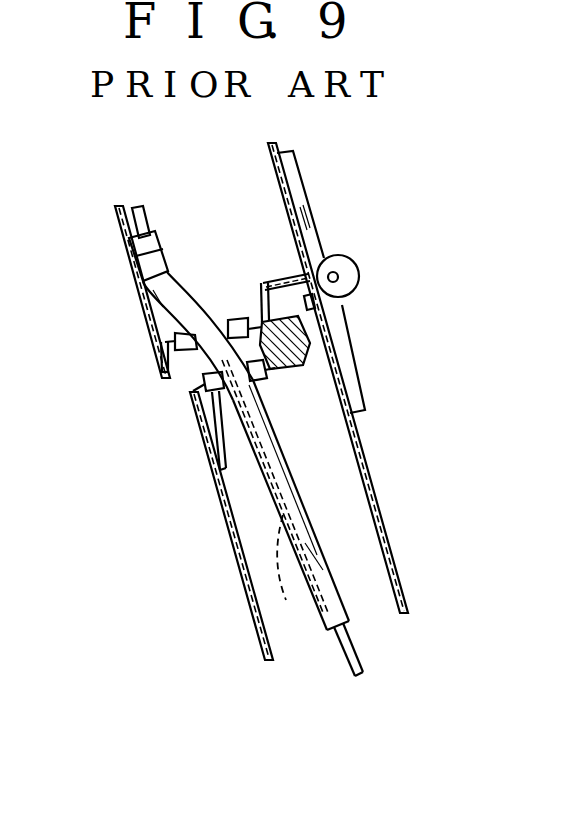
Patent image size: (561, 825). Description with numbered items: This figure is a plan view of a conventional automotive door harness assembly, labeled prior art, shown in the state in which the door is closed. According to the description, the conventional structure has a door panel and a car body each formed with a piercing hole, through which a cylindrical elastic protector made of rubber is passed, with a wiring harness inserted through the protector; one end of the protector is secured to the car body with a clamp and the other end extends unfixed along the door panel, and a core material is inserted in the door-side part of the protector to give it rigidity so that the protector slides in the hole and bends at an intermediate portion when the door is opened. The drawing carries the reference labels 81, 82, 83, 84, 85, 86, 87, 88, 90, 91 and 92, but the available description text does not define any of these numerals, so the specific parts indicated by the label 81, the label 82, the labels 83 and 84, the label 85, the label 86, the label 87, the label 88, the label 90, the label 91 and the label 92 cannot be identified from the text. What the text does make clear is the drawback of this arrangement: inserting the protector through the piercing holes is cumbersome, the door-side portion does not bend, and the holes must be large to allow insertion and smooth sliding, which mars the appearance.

The bracket 81 is at (192, 401).
The upper guide rail 82 is at (145, 328).
The bolt 83 is at (262, 382).
The bolt 84 is at (228, 320).
The tube 85 is at (293, 479).
The rod 86 is at (356, 650).
The elbow connector 87 is at (166, 266).
The cable 88 is at (290, 577).
The lower guide rail 90 is at (226, 554).
The bolt 91 is at (217, 472).
The bolt 92 is at (177, 362).